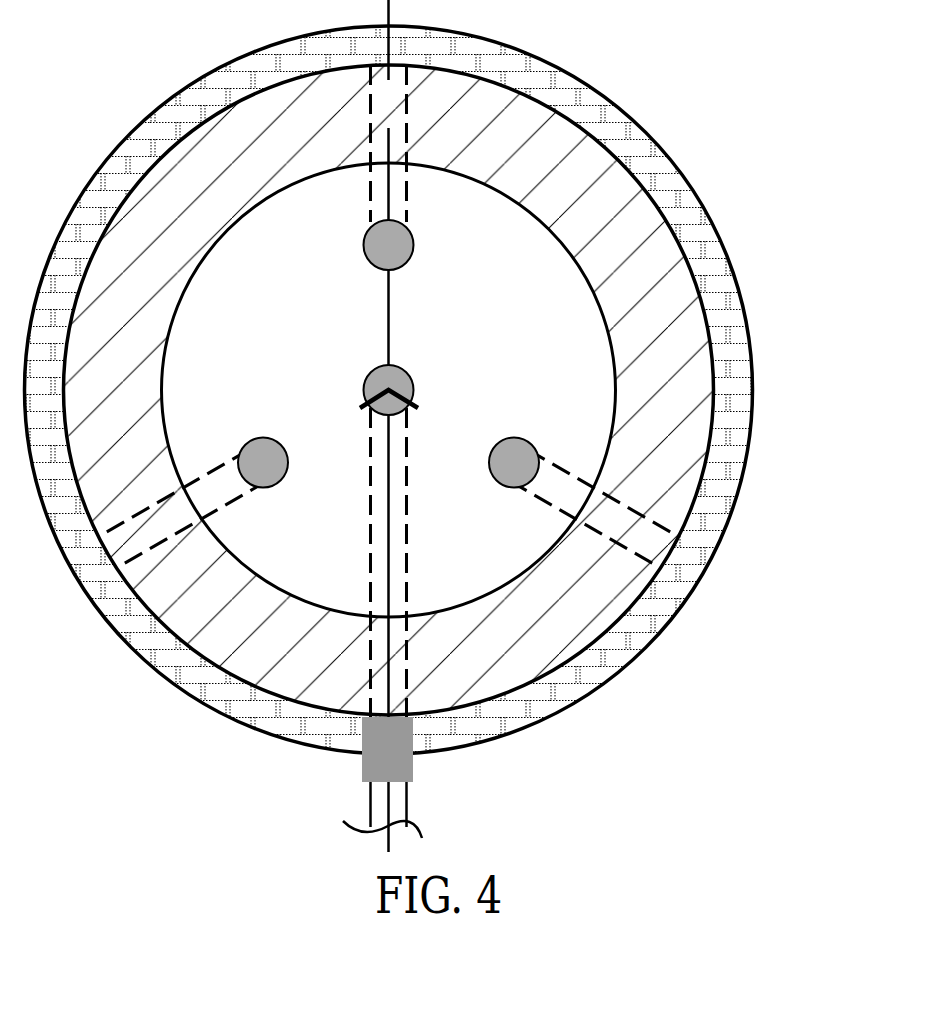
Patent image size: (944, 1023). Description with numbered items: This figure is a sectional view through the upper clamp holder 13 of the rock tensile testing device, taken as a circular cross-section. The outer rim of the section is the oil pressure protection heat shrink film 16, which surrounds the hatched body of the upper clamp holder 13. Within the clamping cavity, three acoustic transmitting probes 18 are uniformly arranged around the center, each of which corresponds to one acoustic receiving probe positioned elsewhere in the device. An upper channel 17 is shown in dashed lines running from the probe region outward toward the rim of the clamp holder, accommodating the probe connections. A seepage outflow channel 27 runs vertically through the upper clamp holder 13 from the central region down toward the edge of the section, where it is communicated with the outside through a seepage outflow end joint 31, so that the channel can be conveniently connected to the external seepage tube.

The upper clamp holder 13 is at (665, 378).
The oil pressure protection heat shrink film 16 is at (713, 262).
The upper channel 17 is at (213, 490).
The acoustic transmitting probe 18 is at (514, 462).
The seepage outflow channel 27 is at (398, 512).
The seepage outflow end joint 31 is at (385, 748).